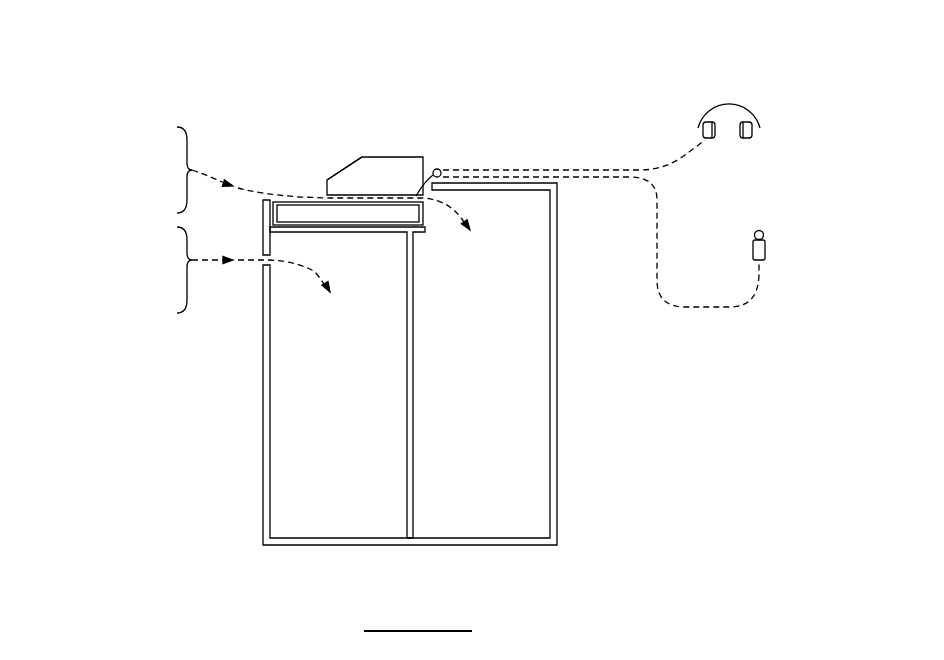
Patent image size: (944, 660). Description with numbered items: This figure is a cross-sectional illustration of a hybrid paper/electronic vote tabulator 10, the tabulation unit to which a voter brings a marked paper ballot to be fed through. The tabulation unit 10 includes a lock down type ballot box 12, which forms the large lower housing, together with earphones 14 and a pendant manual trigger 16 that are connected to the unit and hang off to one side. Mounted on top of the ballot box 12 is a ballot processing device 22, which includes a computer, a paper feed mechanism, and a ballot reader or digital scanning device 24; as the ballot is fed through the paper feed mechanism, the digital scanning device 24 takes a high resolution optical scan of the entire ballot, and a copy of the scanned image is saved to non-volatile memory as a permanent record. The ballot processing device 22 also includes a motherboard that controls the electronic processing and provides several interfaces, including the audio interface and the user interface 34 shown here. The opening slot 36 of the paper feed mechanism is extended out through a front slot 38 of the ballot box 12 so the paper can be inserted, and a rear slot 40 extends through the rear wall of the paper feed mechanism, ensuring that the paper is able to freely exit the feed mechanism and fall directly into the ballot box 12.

The hybrid paper/electronic vote tabulator 10 is at (494, 68).
The ballot box 12 is at (557, 486).
The earphones 14 is at (745, 88).
The pendant manual trigger 16 is at (766, 247).
The ballot processing device 22 is at (331, 136).
The digital scanning device 24 is at (383, 169).
The user interface 34 is at (327, 178).
The opening slot 36 is at (322, 196).
The front slot 38 is at (356, 196).
The rear slot 40 is at (442, 170).